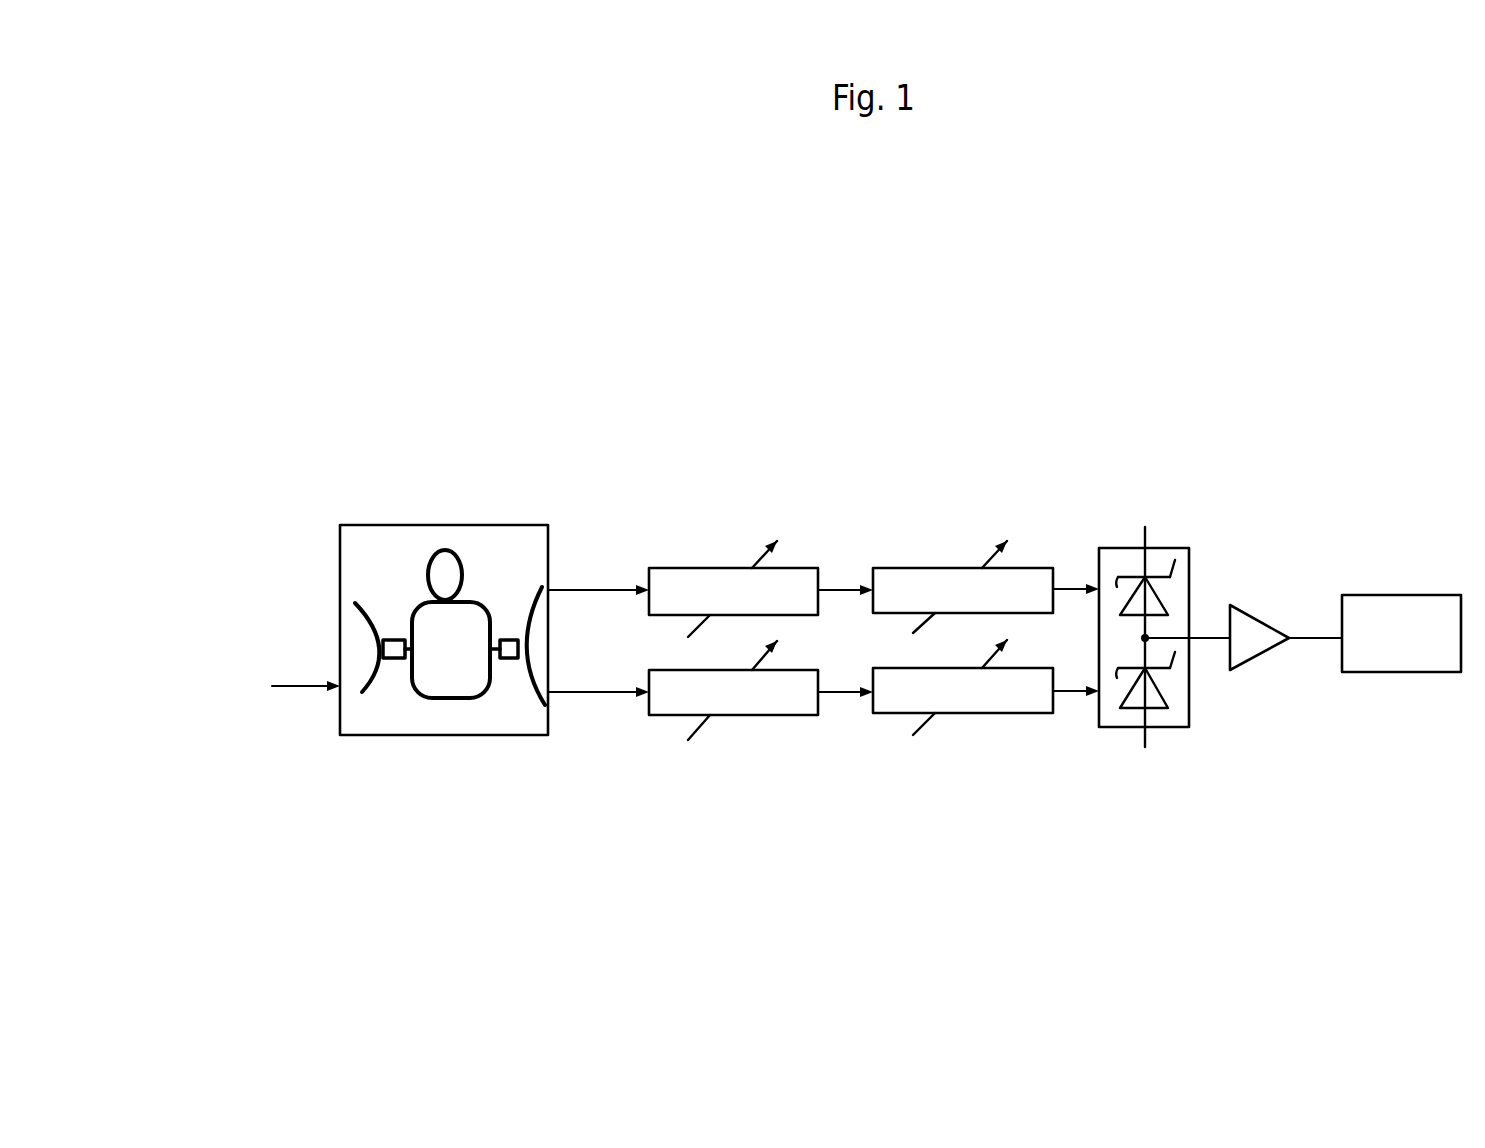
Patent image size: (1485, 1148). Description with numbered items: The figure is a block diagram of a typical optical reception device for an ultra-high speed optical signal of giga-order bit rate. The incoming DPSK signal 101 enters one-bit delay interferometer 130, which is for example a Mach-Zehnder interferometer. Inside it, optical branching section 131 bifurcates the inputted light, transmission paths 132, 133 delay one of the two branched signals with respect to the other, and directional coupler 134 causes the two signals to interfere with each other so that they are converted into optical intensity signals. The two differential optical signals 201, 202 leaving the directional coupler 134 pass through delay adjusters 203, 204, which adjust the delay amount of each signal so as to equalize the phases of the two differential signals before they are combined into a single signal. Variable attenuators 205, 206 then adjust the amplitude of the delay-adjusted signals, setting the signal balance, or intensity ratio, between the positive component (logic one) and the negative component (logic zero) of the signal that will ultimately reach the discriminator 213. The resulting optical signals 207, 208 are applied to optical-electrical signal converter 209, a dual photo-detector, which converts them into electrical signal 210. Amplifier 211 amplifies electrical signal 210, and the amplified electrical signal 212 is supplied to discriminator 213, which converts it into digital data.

The DPSK signal input 101 is at (298, 685).
The one-bit delay interferometer 130 is at (495, 525).
The optical branching section 131 is at (392, 660).
The transmission path 132 is at (428, 570).
The transmission path 133 is at (446, 700).
The directional coupler 134 is at (508, 660).
The optical signal 201 is at (598, 590).
The optical signal 202 is at (596, 692).
The delay adjuster 203 is at (700, 568).
The delay adjuster 204 is at (757, 715).
The variable attenuator 205 is at (930, 568).
The variable attenuator 206 is at (975, 713).
The optical signal 207 is at (1070, 588).
The optical signal 208 is at (1066, 692).
The optical-electrical signal converter 209 is at (1163, 548).
The electrical signal 210 is at (1210, 640).
The amplifier 211 is at (1258, 618).
The electrical signal 212 is at (1310, 640).
The discriminator 213 is at (1423, 595).